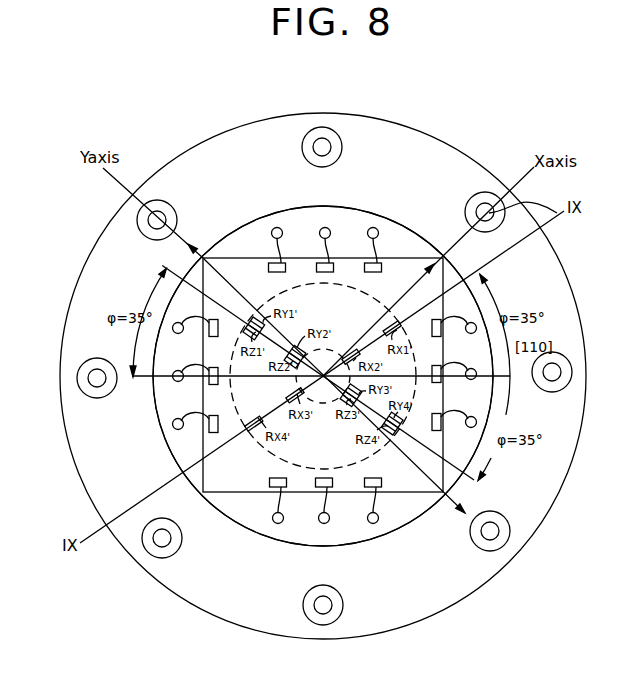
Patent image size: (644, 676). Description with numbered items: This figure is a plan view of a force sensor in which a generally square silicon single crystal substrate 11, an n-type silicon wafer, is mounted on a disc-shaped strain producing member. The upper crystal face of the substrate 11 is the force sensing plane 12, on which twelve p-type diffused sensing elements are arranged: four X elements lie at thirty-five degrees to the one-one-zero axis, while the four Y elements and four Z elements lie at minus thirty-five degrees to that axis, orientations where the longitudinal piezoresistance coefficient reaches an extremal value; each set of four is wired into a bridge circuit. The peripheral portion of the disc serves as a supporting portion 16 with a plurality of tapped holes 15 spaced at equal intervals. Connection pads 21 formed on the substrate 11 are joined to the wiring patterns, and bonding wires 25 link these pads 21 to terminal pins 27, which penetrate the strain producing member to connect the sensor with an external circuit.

The silicon single crystal substrate 11 is at (447, 249).
The force sensing plane 12 is at (403, 267).
The tapped holes 15 is at (88, 373).
The supporting portion 16 is at (77, 420).
The connection pads 21 is at (307, 258).
The bonding wires 25 is at (328, 262).
The terminal pins 27 is at (325, 233).